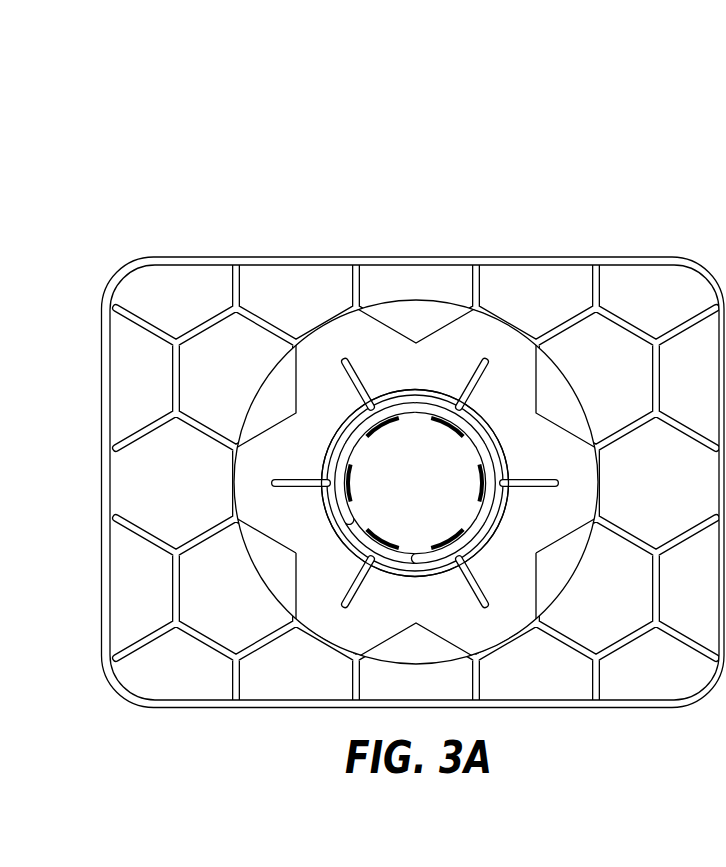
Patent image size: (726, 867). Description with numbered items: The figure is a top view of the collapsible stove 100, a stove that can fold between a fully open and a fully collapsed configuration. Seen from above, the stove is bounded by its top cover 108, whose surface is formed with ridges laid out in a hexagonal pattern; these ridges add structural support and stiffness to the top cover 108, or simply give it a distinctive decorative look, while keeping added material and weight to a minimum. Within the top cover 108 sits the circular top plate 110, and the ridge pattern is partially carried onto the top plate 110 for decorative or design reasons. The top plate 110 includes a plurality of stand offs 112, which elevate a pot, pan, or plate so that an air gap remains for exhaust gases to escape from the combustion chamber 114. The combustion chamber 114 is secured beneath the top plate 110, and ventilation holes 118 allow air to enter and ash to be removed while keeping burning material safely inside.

The collapsible stove 100 is at (195, 118).
The top cover 108 is at (200, 256).
The top plate 110 is at (502, 318).
The stand offs 112 is at (347, 364).
The combustion chamber 114 is at (422, 448).
The ventilation holes 118 is at (372, 537).